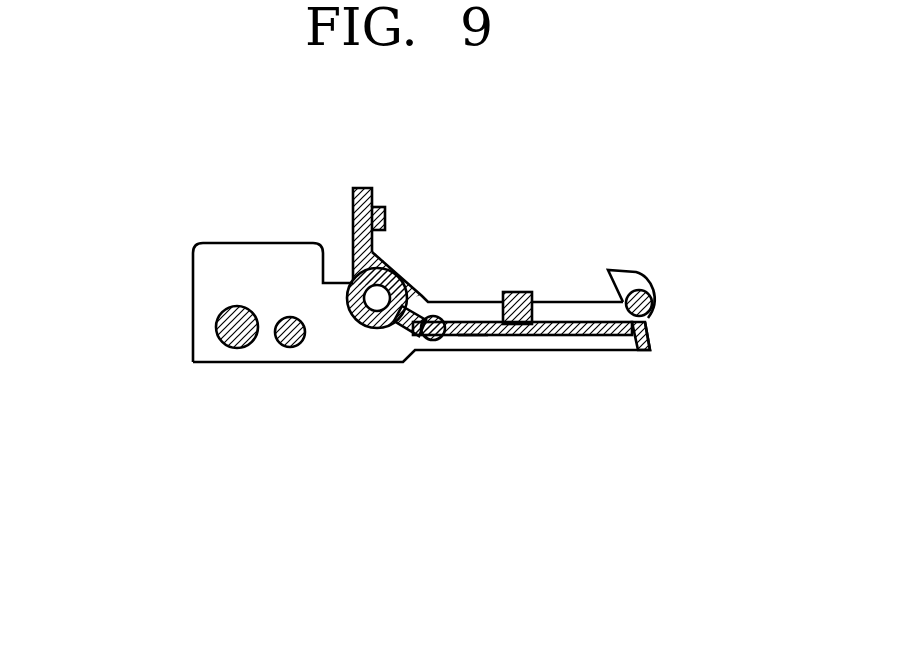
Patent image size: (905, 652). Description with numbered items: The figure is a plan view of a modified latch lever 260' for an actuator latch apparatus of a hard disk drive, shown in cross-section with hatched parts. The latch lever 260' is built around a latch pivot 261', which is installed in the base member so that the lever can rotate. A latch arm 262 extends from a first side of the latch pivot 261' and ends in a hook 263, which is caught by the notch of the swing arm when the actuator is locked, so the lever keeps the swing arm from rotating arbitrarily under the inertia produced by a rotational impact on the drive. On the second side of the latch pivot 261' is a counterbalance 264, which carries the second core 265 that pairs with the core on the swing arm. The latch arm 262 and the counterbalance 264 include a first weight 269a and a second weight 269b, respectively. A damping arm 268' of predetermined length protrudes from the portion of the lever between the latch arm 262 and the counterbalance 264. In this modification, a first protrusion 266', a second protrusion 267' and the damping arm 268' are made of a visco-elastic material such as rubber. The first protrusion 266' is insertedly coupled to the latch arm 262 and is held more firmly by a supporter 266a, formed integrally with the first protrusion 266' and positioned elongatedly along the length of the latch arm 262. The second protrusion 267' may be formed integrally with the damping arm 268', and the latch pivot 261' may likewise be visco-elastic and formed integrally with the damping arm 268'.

The latch lever 260' is at (432, 323).
The latch pivot 261' is at (363, 353).
The latch arm 262 is at (590, 312).
The hook 263 is at (628, 275).
The counterbalance 264 is at (320, 343).
The second core 265 is at (277, 338).
The first protrusion 266' is at (540, 354).
The supporter 266a is at (472, 338).
The second protrusion 267' is at (300, 225).
The damping arm 268' is at (257, 210).
The first weight 269a is at (648, 318).
The second weight 269b is at (218, 328).